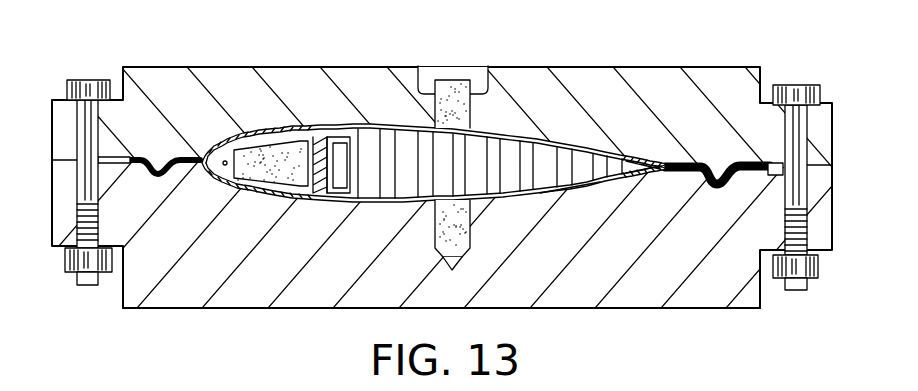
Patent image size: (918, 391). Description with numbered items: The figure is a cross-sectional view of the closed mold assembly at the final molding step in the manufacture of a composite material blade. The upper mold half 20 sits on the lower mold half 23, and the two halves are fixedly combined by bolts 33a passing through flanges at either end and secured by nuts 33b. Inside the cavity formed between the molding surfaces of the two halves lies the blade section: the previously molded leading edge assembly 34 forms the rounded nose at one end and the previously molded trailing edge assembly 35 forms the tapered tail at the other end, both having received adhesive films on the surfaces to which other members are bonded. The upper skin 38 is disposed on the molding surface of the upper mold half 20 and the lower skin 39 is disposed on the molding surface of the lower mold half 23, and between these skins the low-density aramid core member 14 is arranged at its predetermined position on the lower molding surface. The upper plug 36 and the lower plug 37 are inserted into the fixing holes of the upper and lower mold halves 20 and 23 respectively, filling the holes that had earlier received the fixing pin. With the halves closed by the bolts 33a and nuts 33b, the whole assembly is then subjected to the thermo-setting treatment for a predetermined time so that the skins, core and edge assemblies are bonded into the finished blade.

The aramid core member 14 is at (565, 141).
The upper mold half 20 is at (695, 67).
The lower mold half 23 is at (682, 308).
The bolts 33a is at (86, 80).
The nuts 33b is at (64, 262).
The leading edge assembly 34 is at (255, 129).
The trailing edge assembly 35 is at (652, 157).
The upper plug 36 is at (471, 105).
The lower plug 37 is at (435, 240).
The upper skin 38 is at (603, 150).
The lower skin 39 is at (566, 192).